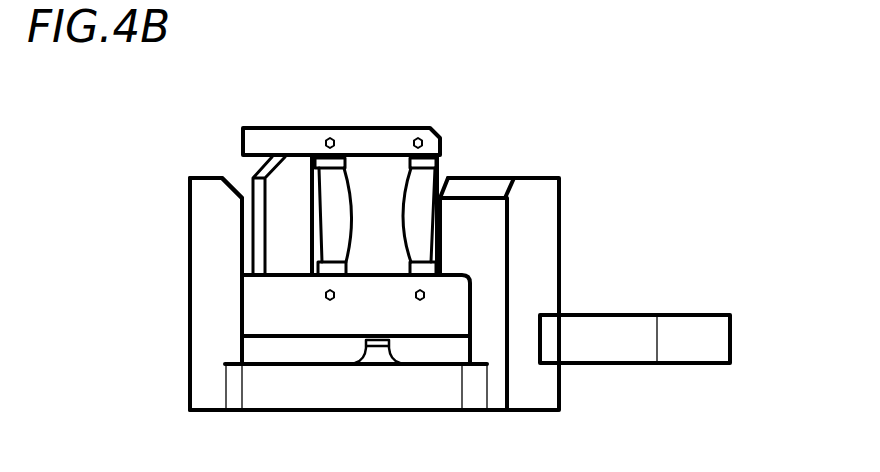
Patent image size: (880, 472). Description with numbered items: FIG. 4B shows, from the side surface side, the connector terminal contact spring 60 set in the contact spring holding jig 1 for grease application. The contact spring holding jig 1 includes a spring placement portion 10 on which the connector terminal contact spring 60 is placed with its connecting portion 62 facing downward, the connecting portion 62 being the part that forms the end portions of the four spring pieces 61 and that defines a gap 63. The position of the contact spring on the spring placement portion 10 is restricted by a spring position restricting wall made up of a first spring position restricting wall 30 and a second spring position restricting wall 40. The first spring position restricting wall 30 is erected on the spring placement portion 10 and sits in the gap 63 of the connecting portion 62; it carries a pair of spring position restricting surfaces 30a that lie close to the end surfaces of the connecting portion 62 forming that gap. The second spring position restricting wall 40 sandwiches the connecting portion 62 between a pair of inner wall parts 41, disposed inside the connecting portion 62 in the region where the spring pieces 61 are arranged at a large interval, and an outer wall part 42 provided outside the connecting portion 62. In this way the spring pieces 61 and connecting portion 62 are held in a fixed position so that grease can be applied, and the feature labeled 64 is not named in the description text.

The contact spring holding jig for grease application 1 is at (535, 135).
The spring placement portion 10 is at (264, 381).
The first spring position restricting wall 30 is at (542, 165).
The spring position restricting surface 30a is at (487, 318).
The second spring position restricting wall 40 is at (213, 165).
The inner wall part 41 is at (251, 178).
The outer wall part 42 is at (186, 240).
The connector terminal contact spring 60 is at (302, 118).
The spring piece 61 is at (352, 183).
The connecting portion 62 is at (413, 0).
The gap 63 is at (480, 312).
The step face of second guide block 64 is at (438, 263).